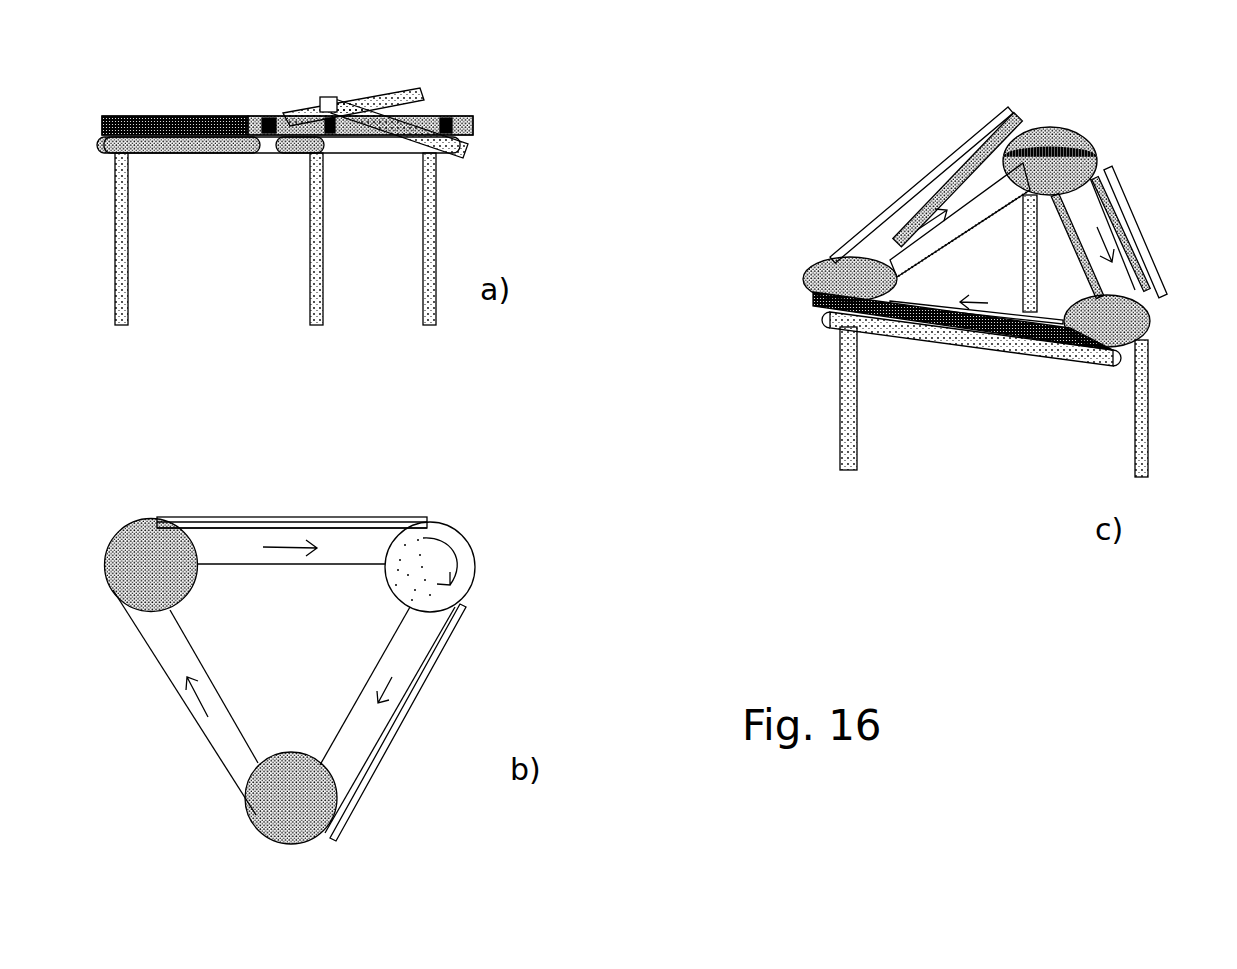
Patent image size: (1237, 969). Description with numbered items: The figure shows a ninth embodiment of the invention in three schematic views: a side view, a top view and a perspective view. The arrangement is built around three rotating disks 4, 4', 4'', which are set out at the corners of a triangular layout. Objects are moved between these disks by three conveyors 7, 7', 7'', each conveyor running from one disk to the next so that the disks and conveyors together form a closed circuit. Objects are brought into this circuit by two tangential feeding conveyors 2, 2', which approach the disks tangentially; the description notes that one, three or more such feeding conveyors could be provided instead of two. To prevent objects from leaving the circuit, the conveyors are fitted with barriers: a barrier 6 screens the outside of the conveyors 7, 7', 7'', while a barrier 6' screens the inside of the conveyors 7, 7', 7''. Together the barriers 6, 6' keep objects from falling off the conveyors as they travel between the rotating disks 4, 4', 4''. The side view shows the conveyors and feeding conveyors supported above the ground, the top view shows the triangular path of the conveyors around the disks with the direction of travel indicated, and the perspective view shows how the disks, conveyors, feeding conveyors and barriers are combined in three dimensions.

The tangential feeding conveyor 2 is at (595, 275).
The tangential feeding conveyor 2' is at (773, 437).
The rotating disk 4 is at (665, 573).
The rotating disk 4' is at (501, 397).
The rotating disk 4'' is at (744, 345).
The barrier 6 is at (652, 447).
The barrier 6' is at (650, 455).
The conveyor 7 is at (622, 476).
The conveyor 7' is at (589, 330).
The conveyor 7'' is at (754, 459).